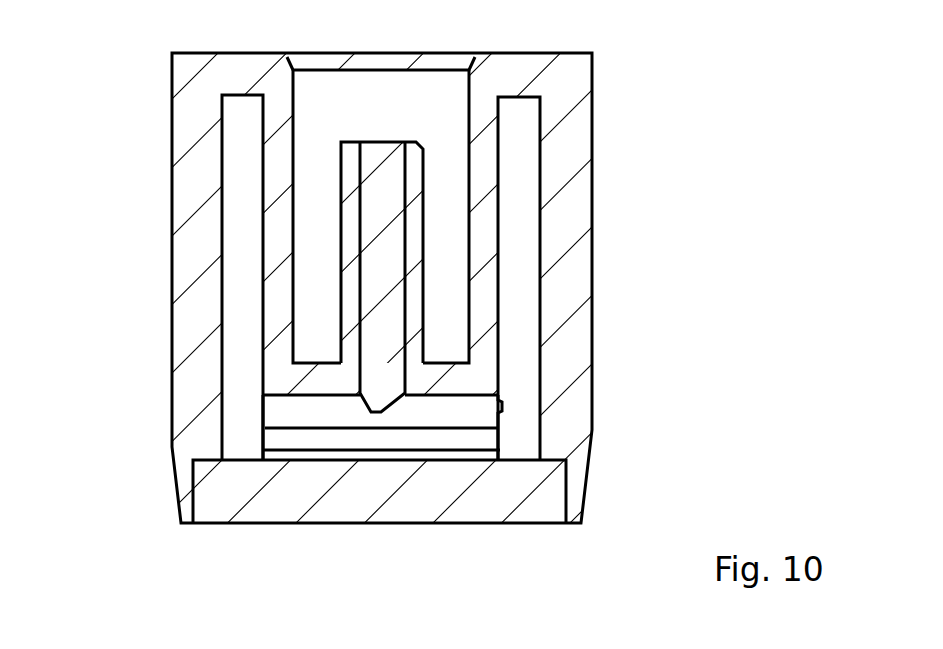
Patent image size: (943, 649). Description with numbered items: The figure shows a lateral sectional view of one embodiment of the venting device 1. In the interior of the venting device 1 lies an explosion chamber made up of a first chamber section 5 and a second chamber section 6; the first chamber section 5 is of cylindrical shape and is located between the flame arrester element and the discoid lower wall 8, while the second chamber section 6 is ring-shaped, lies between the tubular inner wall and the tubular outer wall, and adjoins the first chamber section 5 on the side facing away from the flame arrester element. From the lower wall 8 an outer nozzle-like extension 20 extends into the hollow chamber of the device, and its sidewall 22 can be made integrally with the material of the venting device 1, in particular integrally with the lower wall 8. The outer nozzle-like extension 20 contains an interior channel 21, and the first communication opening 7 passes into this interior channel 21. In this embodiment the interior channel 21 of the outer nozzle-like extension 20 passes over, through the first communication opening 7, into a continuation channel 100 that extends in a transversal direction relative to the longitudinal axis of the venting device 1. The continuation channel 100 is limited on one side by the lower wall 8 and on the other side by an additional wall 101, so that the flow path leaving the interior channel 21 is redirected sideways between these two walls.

The venting device 1 is at (112, 131).
The first chamber section 5 is at (517, 441).
The second chamber section 6 is at (517, 255).
The first communication opening 7 is at (260, 413).
The discoid lower wall 8 is at (440, 358).
The outer nozzle-like extension 20 is at (352, 140).
The interior channel 21 is at (380, 176).
The sidewall 22 is at (355, 207).
The continuation channel 100 is at (413, 411).
The additional wall 101 is at (323, 458).